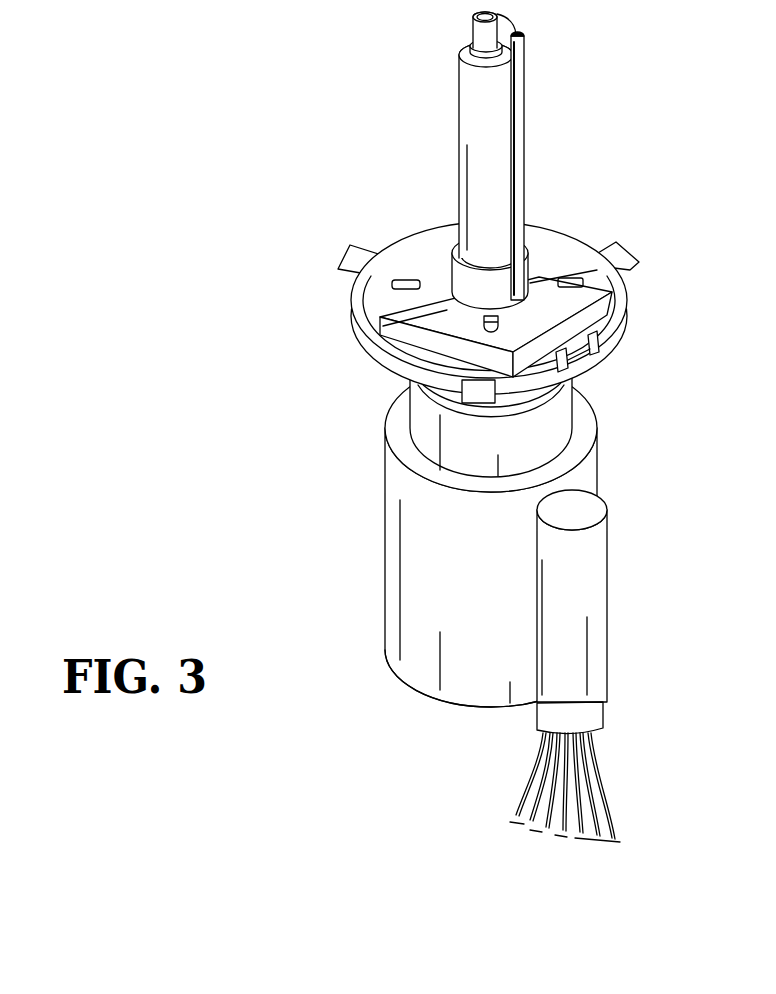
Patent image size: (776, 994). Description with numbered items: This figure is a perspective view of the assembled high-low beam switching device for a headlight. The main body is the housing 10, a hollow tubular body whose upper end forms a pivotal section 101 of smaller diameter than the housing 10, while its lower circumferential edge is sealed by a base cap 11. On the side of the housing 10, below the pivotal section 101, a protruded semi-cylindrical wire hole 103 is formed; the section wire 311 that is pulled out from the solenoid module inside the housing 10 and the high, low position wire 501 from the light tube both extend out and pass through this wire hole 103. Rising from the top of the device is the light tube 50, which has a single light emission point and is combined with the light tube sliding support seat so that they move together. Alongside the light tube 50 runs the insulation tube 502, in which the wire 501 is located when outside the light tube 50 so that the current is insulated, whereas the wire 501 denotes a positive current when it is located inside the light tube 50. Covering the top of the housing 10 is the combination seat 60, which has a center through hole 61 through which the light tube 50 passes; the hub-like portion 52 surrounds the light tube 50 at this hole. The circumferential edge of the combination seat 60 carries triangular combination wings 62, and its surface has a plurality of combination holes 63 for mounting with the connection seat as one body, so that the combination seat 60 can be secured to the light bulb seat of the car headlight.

The housing 10 is at (383, 560).
The base cap 11 is at (430, 698).
The pivotal section 101 is at (573, 413).
The wire hole 103 is at (593, 653).
The section wire 311 is at (533, 771).
The high and low position wire 501 is at (588, 790).
The light tube 50 is at (450, 120).
The insulation tube 502 is at (516, 106).
The hub 52 is at (455, 262).
The combination seat 60 is at (566, 237).
The center through hole 61 is at (480, 322).
The combination wing 62 is at (342, 254).
The combination hole 63 is at (585, 283).